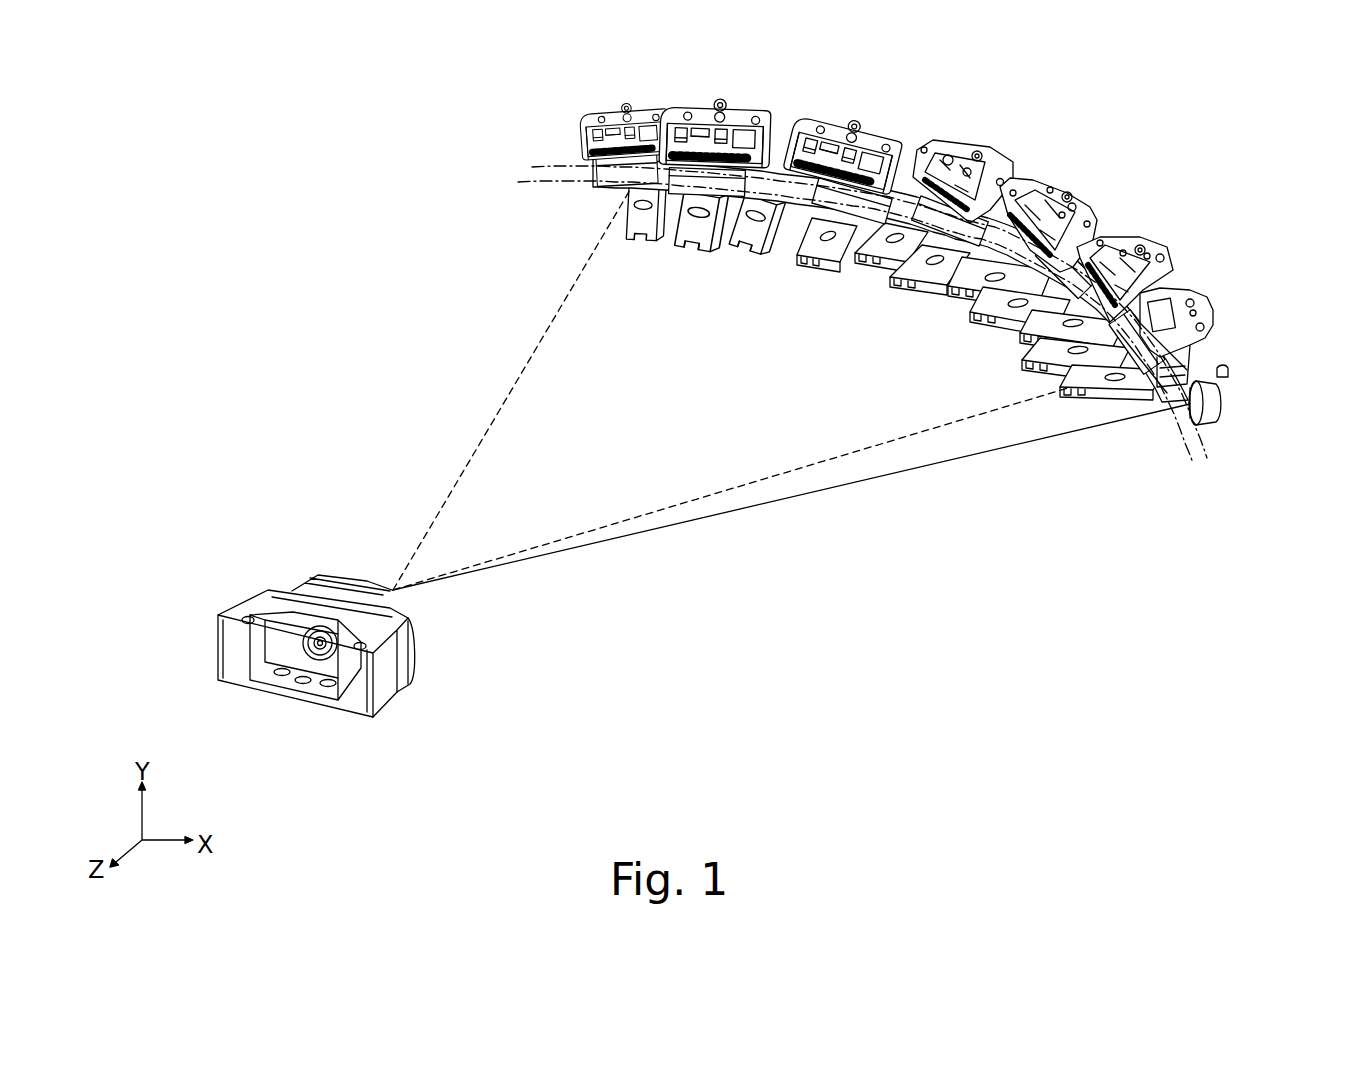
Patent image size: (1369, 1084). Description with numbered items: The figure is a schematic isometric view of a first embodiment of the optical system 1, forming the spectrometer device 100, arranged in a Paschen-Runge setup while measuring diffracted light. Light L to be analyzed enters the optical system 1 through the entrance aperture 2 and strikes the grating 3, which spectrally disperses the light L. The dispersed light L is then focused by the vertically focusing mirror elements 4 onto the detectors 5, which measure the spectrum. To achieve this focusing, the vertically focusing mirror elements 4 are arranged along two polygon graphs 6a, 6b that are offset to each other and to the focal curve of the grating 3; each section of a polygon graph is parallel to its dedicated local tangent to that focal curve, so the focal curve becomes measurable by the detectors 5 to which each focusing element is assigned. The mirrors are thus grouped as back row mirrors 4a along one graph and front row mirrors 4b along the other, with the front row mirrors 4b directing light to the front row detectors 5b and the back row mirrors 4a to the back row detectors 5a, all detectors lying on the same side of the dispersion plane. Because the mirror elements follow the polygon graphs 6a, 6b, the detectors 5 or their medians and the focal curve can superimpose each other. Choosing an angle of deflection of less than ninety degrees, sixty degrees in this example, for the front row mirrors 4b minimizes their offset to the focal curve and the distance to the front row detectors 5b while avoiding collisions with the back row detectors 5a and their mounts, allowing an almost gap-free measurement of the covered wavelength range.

The optical system 1 is at (338, 328).
The spectrometer device 100 is at (894, 280).
The entrance aperture 2 is at (1220, 402).
The grating 3 is at (260, 602).
The vertically focusing mirror elements 4 is at (603, 187).
The back row mirrors 4a is at (687, 192).
The front row mirrors 4b is at (812, 192).
The detectors 5 is at (1000, 177).
The back row detectors 5a is at (1140, 180).
The front row detectors 5b is at (1157, 247).
The polygon graph 6a is at (852, 301).
The polygon graph 6b is at (837, 316).
The light L is at (791, 390).